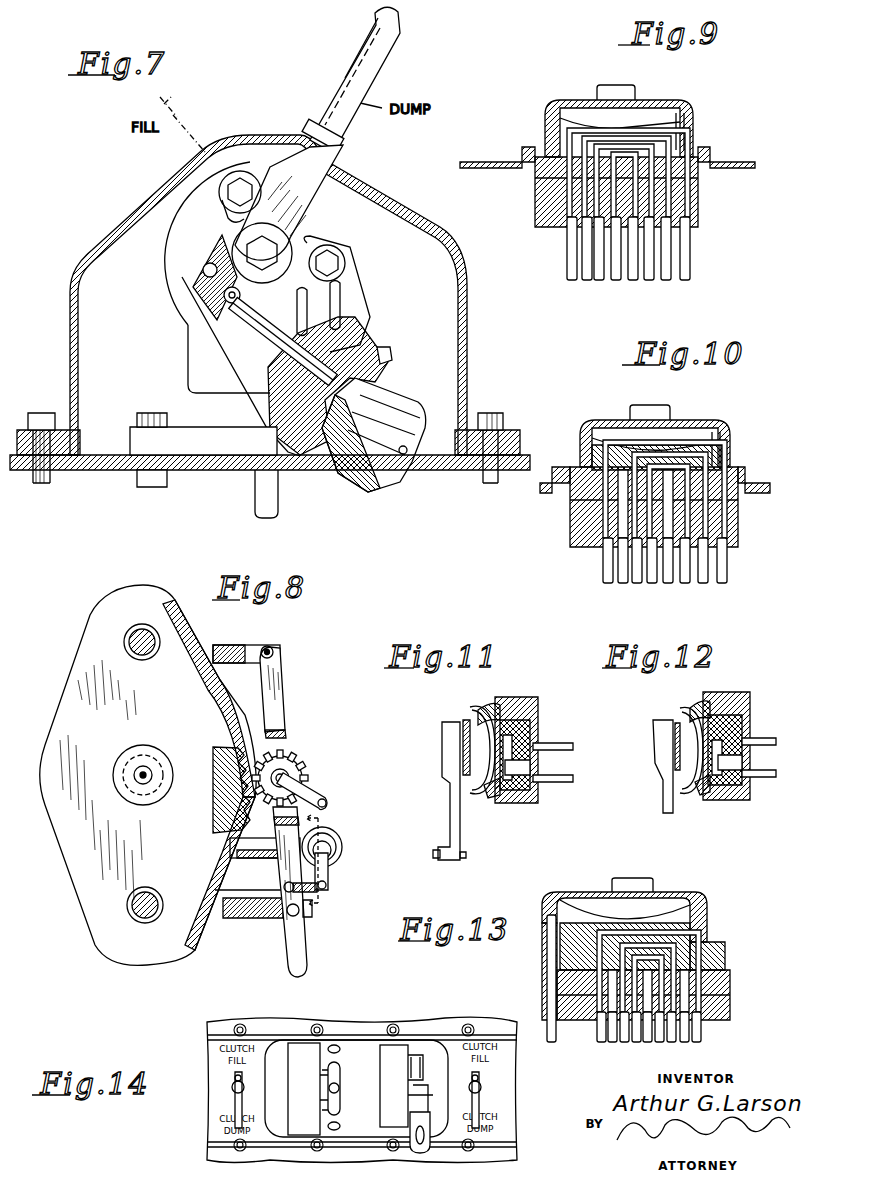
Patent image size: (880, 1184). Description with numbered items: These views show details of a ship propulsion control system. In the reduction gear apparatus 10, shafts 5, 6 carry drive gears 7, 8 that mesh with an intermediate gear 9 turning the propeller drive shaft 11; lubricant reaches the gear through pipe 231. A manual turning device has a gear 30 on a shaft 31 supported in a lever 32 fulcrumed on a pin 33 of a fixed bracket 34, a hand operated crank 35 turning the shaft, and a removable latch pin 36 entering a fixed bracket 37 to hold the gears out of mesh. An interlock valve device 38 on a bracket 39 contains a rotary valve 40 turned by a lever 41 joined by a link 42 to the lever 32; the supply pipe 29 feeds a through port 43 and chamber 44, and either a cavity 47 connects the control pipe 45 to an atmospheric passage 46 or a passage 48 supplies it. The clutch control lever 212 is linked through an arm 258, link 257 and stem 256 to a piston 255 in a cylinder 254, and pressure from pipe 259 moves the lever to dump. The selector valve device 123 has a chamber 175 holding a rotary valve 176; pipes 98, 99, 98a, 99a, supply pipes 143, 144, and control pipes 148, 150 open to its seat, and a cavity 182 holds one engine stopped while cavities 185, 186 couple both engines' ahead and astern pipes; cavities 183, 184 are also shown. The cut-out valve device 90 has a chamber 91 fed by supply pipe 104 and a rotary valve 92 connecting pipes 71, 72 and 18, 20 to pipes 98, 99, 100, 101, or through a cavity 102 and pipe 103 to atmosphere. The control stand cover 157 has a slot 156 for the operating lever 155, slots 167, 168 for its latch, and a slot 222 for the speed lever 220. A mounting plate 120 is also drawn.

In FIG. 8, the shaft 5 is at (128, 640).
In FIG. 8, the shaft 6 is at (133, 912).
In FIG. 8, the drive gear 7 is at (190, 630).
In FIG. 8, the drive gear 8 is at (200, 950).
In FIG. 8, the intermediate gear 9 is at (215, 775).
In FIG. 8, the reduction gear apparatus 10 is at (73, 667).
In FIG. 8, the drive shaft 11 is at (328, 859).
In FIG. 13, the pipe 18 is at (702, 1031).
In FIG. 13, the pipe 20 is at (660, 1040).
In FIG. 11, the fluid pressure supply pipe 29 is at (573, 749).
In FIG. 12, the fluid pressure supply pipe 29 is at (776, 745).
In FIG. 8, the gear 30 is at (293, 760).
In FIG. 8, the shaft 31 is at (288, 777).
In FIG. 8, the lever 32 is at (278, 710).
In FIG. 8, the pin 33 is at (274, 650).
In FIG. 8, the fixed bracket 34 is at (236, 650).
In FIG. 8, the hand operated crank 35 is at (325, 799).
In FIG. 8, the removable latch pin 36 is at (298, 914).
In FIG. 8, the fixed bracket 37 is at (240, 920).
In FIG. 8, the interlock valve device 38 is at (343, 842).
In FIG. 11, the interlock valve device 38 is at (518, 697).
In FIG. 12, the interlock valve device 38 is at (732, 692).
In FIG. 8, the bracket 39 is at (242, 860).
In FIG. 11, the rotary valve 40 is at (500, 702).
In FIG. 12, the rotary valve 40 is at (712, 700).
In FIG. 8, the lever 41 is at (332, 868).
In FIG. 11, the lever 41 is at (448, 807).
In FIG. 12, the lever 41 is at (662, 801).
In FIG. 8, the link 42 is at (326, 886).
In FIG. 11, the link 42 is at (442, 850).
In FIG. 11, the through port 43 is at (541, 735).
In FIG. 12, the through port 43 is at (752, 732).
In FIG. 11, the chamber 44 is at (474, 721).
In FIG. 12, the chamber 44 is at (683, 720).
In FIG. 11, the control pipe 45 is at (573, 783).
In FIG. 12, the control pipe 45 is at (776, 778).
In FIG. 11, the passage 46 is at (532, 760).
In FIG. 12, the passage 46 is at (748, 756).
In FIG. 11, the cavity 47 is at (500, 792).
In FIG. 12, the passage 48 is at (710, 790).
In FIG. 13, the pipe 71 is at (637, 1040).
In FIG. 13, the pipe 72 is at (610, 1040).
In FIG. 13, the engineer's cut-out valve device 90 is at (708, 910).
In FIG. 13, the chamber 91 is at (568, 905).
In FIG. 13, the rotary valve 92 is at (596, 930).
In FIG. 9, the pipe 98 is at (684, 280).
In FIG. 10, the pipe 98 is at (703, 583).
In FIG. 13, the pipe 98 is at (624, 1040).
In FIG. 9, the pipe 98a is at (598, 280).
In FIG. 10, the pipe 98a is at (630, 583).
In FIG. 9, the pipe 99 is at (567, 245).
In FIG. 10, the pipe 99 is at (603, 557).
In FIG. 13, the pipe 99 is at (597, 1031).
In FIG. 9, the pipe 99a is at (648, 280).
In FIG. 10, the pipe 99a is at (674, 583).
In FIG. 13, the pipe 100 is at (685, 1040).
In FIG. 13, the pipe 101 is at (648, 1040).
In FIG. 13, the cavity 102 is at (645, 917).
In FIG. 13, the pipe 103 is at (728, 1014).
In FIG. 13, the supply pipe 104 is at (550, 1042).
In FIG. 7, the mounting plate 120 is at (490, 466).
In FIG. 9, the mounting plate 120 is at (745, 160).
In FIG. 10, the mounting plate 120 is at (760, 482).
In FIG. 14, the mounting plate 120 is at (455, 1022).
In FIG. 9, the selector valve device 123 is at (562, 115).
In FIG. 10, the selector valve device 123 is at (586, 430).
In FIG. 9, the fluid pressure supply pipe 143 is at (616, 280).
In FIG. 10, the fluid pressure supply pipe 143 is at (648, 583).
In FIG. 9, the fluid pressure supply pipe 144 is at (692, 243).
In FIG. 10, the fluid pressure supply pipe 144 is at (727, 559).
In FIG. 9, the ahead control pipe 148 is at (667, 268).
In FIG. 10, the ahead control pipe 148 is at (705, 576).
In FIG. 9, the astern control pipe 150 is at (587, 260).
In FIG. 10, the astern control pipe 150 is at (623, 577).
In FIG. 14, the operating lever 155 is at (345, 1087).
In FIG. 14, the slot 156 is at (339, 1062).
In FIG. 7, the cover 157 is at (437, 232).
In FIG. 14, the cover 157 is at (207, 1056).
In FIG. 14, the slot 167 is at (326, 1065).
In FIG. 14, the slot 168 is at (334, 1093).
In FIG. 9, the chamber 175 is at (672, 126).
In FIG. 10, the chamber 175 is at (712, 440).
In FIG. 9, the rotary valve 176 is at (548, 118).
In FIG. 10, the rotary valve 176 is at (586, 440).
In FIG. 9, the cavity 182 is at (580, 128).
In FIG. 9, the conductor 183 is at (657, 140).
In FIG. 9, the conductor 184 is at (624, 150).
In FIG. 10, the cavity 185 is at (692, 462).
In FIG. 10, the cavity 186 is at (610, 440).
In FIG. 7, the lever 212 is at (397, 42).
In FIG. 14, the lever 212 is at (233, 1122).
In FIG. 14, the lever 220 is at (422, 1153).
In FIG. 14, the slot 222 is at (416, 1058).
In FIG. 8, the pipe 231 is at (135, 773).
In FIG. 7, the cylinder 254 is at (400, 398).
In FIG. 7, the piston 255 is at (383, 375).
In FIG. 7, the stem 256 is at (260, 327).
In FIG. 7, the link 257 is at (200, 297).
In FIG. 7, the arm 258 is at (222, 250).
In FIG. 7, the pipe 259 is at (412, 470).